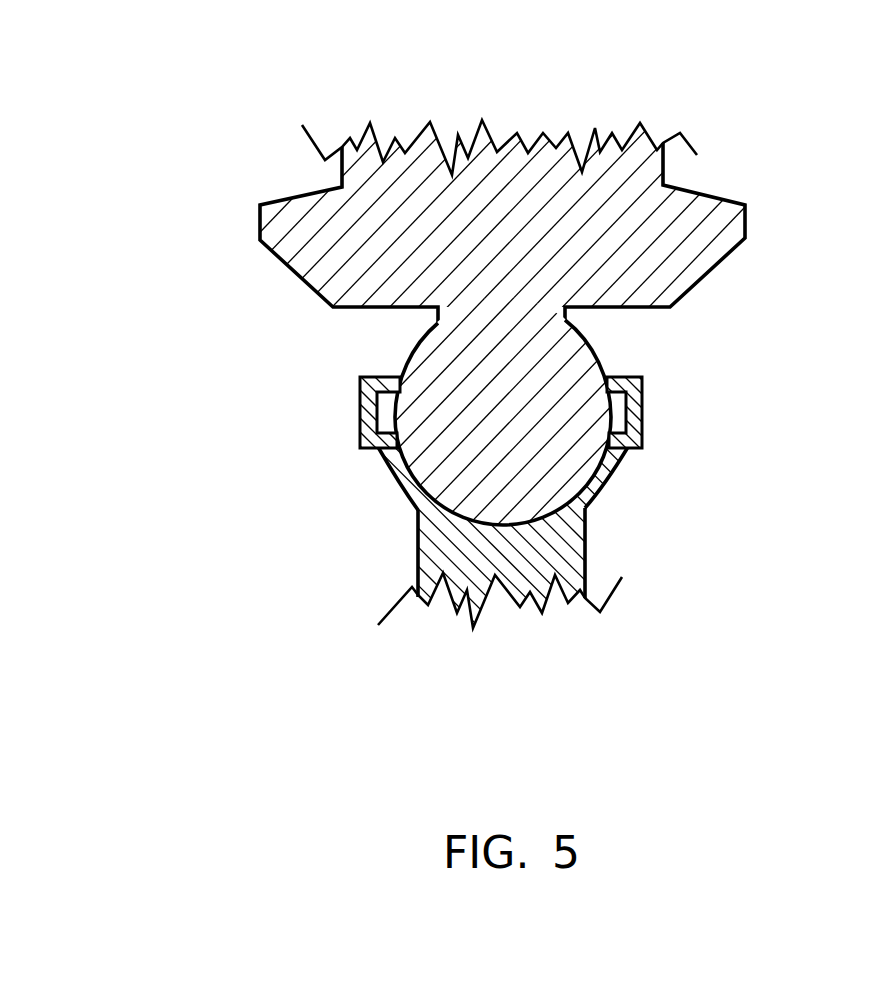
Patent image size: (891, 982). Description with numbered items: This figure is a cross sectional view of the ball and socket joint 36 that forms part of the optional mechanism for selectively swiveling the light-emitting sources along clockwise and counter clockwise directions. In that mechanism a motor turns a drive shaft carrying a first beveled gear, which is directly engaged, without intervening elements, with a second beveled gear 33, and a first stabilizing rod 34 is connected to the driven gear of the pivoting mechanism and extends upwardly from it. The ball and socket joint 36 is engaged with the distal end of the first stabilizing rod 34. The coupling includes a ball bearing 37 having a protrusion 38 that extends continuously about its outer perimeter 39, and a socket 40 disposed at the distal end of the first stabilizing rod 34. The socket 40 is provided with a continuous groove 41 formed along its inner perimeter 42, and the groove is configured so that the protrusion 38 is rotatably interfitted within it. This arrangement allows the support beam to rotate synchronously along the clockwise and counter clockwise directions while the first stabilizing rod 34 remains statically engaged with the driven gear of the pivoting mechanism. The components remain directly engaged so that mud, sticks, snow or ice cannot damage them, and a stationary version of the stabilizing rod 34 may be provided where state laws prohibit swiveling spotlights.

The second beveled gear 33 is at (747, 212).
The first stabilizing rod 34 is at (585, 572).
The ball and socket joint 36 is at (112, 208).
The ball bearing 37 is at (565, 398).
The protrusion 38 is at (613, 410).
The outer perimeter 39 is at (613, 473).
The socket 40 is at (407, 487).
The continuous groove 41 is at (373, 413).
The inner perimeter 42 is at (410, 452).